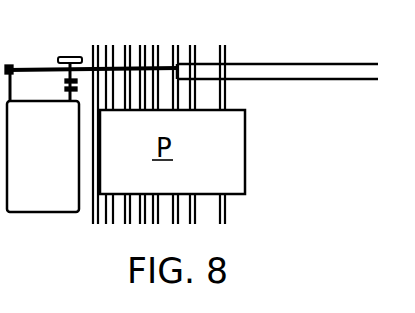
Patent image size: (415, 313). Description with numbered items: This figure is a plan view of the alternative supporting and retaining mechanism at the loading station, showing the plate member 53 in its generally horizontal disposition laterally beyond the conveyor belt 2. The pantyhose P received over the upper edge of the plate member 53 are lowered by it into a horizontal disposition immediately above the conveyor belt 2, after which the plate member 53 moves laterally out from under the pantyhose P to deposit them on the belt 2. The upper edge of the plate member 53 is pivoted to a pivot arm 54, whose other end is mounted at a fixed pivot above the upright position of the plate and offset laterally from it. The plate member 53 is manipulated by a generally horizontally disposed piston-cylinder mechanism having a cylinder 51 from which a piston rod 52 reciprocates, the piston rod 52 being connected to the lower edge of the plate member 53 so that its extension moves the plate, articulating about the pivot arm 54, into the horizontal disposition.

The conveyor belt 2 is at (170, 45).
The cylinder 51 is at (285, 65).
The piston rod 52 is at (33, 67).
The plate member 53 is at (28, 212).
The pivot arm 54 is at (65, 99).